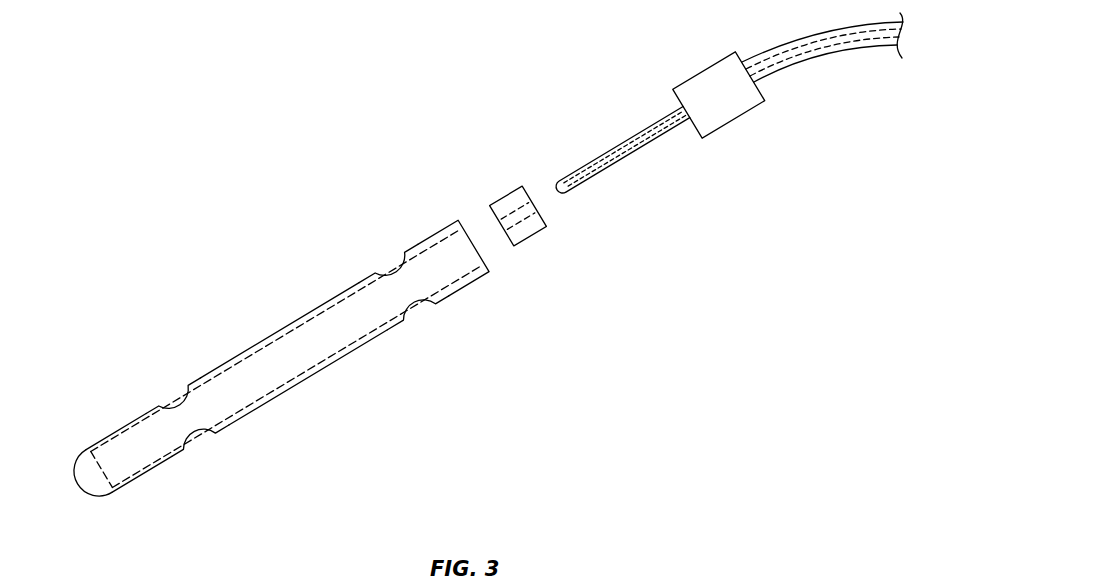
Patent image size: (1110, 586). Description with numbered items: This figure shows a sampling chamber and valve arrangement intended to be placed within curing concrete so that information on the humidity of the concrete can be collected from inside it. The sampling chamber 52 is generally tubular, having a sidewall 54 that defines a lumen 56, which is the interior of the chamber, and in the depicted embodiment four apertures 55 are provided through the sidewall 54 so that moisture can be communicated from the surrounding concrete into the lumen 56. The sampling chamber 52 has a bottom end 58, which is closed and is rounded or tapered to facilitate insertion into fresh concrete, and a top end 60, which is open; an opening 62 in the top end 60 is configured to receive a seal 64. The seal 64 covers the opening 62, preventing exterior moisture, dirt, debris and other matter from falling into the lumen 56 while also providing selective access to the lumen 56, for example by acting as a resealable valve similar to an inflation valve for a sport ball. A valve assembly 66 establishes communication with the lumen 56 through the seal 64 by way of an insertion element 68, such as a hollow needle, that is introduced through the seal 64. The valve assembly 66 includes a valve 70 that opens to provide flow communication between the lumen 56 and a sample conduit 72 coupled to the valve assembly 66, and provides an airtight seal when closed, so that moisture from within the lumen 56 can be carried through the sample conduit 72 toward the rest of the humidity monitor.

The sampling chamber 52 is at (190, 270).
The sidewall 54 is at (172, 465).
The apertures 55 is at (388, 270).
The lumen 56 is at (288, 360).
The bottom end 58 is at (82, 490).
The top end 60 is at (488, 263).
The opening 62 is at (453, 230).
The seal 64 is at (473, 158).
The valve assembly 66 is at (632, 66).
The insertion element 68 is at (616, 163).
The valve 70 is at (722, 107).
The sample conduit 72 is at (817, 55).